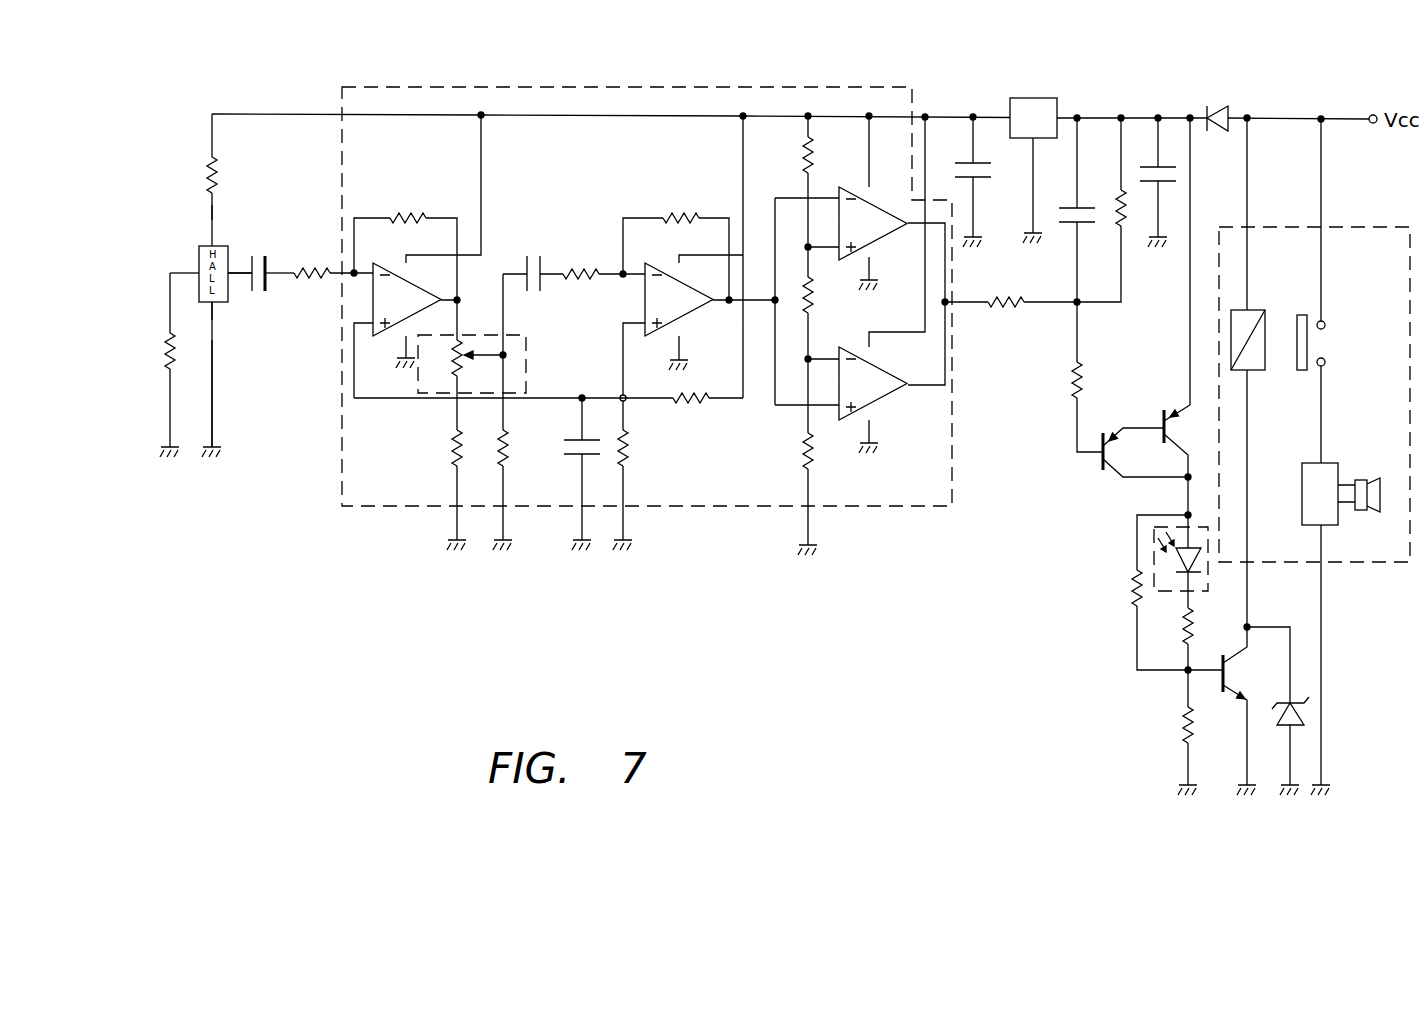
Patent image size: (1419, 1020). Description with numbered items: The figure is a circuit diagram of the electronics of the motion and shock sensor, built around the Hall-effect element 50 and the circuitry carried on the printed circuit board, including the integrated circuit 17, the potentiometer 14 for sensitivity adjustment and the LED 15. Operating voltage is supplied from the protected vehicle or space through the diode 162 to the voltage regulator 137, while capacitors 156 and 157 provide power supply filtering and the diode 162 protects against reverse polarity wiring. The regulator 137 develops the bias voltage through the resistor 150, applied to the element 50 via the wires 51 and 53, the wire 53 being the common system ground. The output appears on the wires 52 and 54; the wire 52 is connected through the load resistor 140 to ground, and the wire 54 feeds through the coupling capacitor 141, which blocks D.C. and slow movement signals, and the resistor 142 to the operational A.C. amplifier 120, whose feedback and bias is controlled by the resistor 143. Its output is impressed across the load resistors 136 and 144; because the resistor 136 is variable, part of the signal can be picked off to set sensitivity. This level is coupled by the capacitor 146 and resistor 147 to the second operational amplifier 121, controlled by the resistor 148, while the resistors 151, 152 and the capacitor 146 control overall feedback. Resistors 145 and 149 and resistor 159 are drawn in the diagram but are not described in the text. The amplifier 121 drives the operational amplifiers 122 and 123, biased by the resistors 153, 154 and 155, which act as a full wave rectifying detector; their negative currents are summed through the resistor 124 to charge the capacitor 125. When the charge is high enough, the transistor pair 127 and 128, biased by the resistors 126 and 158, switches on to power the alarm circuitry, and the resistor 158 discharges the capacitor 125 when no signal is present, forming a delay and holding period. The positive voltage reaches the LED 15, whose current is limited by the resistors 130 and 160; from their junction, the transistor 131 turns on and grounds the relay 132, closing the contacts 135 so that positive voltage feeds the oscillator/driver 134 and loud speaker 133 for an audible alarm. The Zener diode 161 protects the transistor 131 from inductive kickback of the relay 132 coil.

The potentiometer 14 is at (527, 355).
The LED 15 is at (1207, 567).
The integrated circuit 17 is at (672, 510).
The Hall-effect element 50 is at (229, 298).
The wire 51 is at (216, 211).
The wire 52 is at (183, 268).
The wire 53 is at (217, 362).
The wire 54 is at (243, 265).
The operational A.C. amplifier 120 is at (412, 306).
The second operational amplifier 121 is at (688, 312).
The operational amplifier 122 is at (889, 204).
The operational amplifier 123 is at (893, 393).
The resistor 124 is at (1003, 309).
The capacitor 125 is at (1098, 225).
The resistor 126 is at (1085, 368).
The transistor 127 is at (1098, 458).
The transistor 128 is at (1160, 437).
The resistor 130 is at (1182, 618).
The transistor 131 is at (1227, 695).
The relay 132 is at (1255, 308).
The loud speaker 133 is at (1373, 477).
The oscillator/driver 134 is at (1333, 528).
The contacts 135 is at (1308, 340).
The variable resistor 136 is at (452, 363).
The voltage regulator 137 is at (1048, 98).
The load resistor 140 is at (171, 362).
The coupling capacitor 141 is at (269, 291).
The resistor 142 is at (308, 265).
The resistor 143 is at (393, 214).
The load resistor 144 is at (452, 440).
The resistor 145 is at (504, 440).
The capacitor 146 is at (523, 263).
The resistor 147 is at (577, 265).
The resistor 148 is at (668, 218).
The capacitor 149 is at (575, 441).
The resistor 150 is at (207, 163).
The resistor 151 is at (625, 443).
The resistor 152 is at (706, 402).
The resistor 153 is at (812, 152).
The resistor 154 is at (813, 300).
The resistor 155 is at (803, 468).
The capacitor 156 is at (968, 162).
The capacitor 157 is at (1155, 165).
The resistor 158 is at (1118, 197).
The resistor 159 is at (1132, 582).
The resistor 160 is at (1183, 739).
The Zener diode 161 is at (1283, 727).
The diode 162 is at (1220, 105).